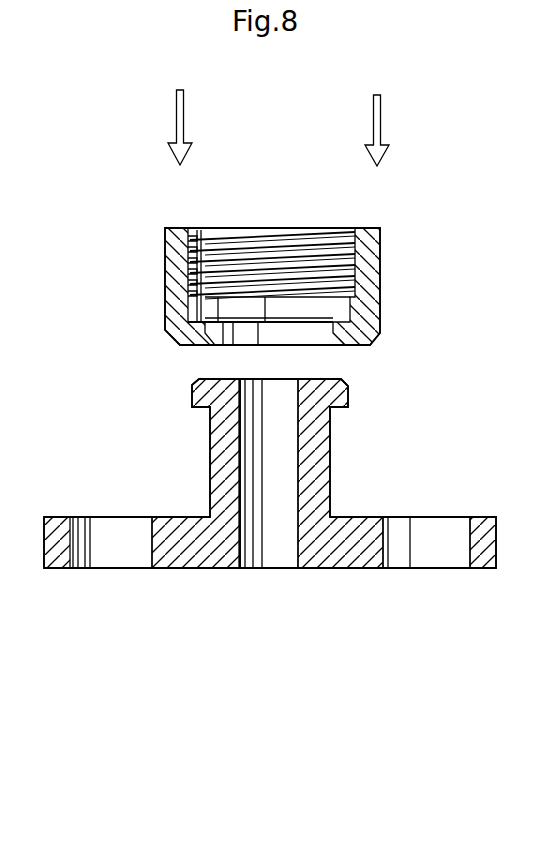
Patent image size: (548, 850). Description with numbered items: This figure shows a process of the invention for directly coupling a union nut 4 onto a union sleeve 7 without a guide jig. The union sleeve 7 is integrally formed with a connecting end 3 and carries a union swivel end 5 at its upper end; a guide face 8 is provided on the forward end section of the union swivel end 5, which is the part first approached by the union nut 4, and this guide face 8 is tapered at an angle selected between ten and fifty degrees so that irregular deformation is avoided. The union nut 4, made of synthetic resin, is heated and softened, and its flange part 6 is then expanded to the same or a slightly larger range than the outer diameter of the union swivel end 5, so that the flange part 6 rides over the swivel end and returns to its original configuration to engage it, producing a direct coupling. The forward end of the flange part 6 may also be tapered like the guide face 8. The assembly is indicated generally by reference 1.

The joint assembly 1 is at (146, 395).
The connecting end 3 is at (360, 527).
The union nut 4 is at (380, 262).
The union swivel end 5 is at (345, 401).
The flange part 6 is at (372, 343).
The union sleeve 7 is at (216, 470).
The guide face 8 is at (222, 333).